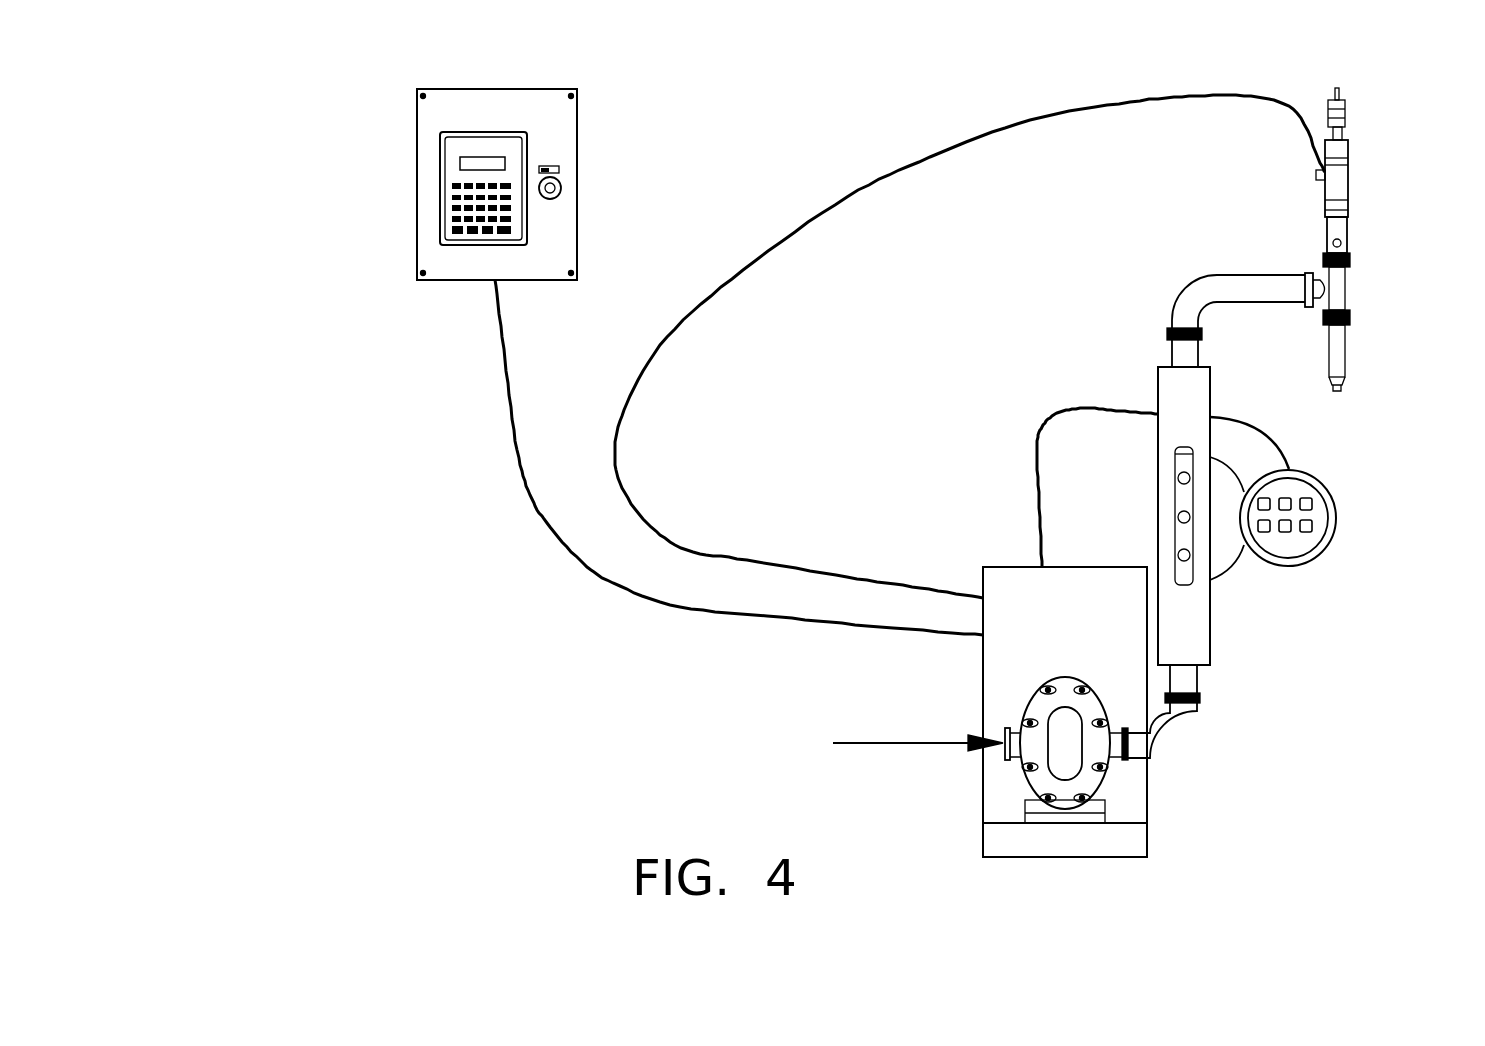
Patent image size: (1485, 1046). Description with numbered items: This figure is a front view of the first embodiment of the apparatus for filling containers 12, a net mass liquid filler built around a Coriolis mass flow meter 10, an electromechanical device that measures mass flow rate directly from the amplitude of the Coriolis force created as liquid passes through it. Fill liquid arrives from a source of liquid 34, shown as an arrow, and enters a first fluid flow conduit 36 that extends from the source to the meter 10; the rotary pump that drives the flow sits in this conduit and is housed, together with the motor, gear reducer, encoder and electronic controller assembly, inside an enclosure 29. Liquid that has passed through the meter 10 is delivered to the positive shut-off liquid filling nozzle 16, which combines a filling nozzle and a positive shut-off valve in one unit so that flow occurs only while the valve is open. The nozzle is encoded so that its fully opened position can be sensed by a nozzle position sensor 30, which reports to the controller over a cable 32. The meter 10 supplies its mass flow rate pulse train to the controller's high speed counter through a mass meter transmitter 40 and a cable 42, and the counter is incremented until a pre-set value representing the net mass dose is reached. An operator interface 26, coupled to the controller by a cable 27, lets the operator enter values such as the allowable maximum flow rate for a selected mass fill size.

The Coriolis mass flow meter 10 is at (1187, 393).
The apparatus for filling containers 12 is at (318, 730).
The positive shut-off liquid filling nozzle 16 is at (1338, 291).
The operator interface 26 is at (423, 165).
The cable 27 is at (507, 350).
The enclosure 29 is at (1080, 613).
The nozzle position sensor 30 is at (1319, 175).
The cable 32 is at (845, 198).
The source of liquid 34 is at (935, 740).
The first fluid flow conduit 36 is at (1183, 722).
The mass meter transmitter 40 is at (1305, 495).
The cable 42 is at (1037, 437).